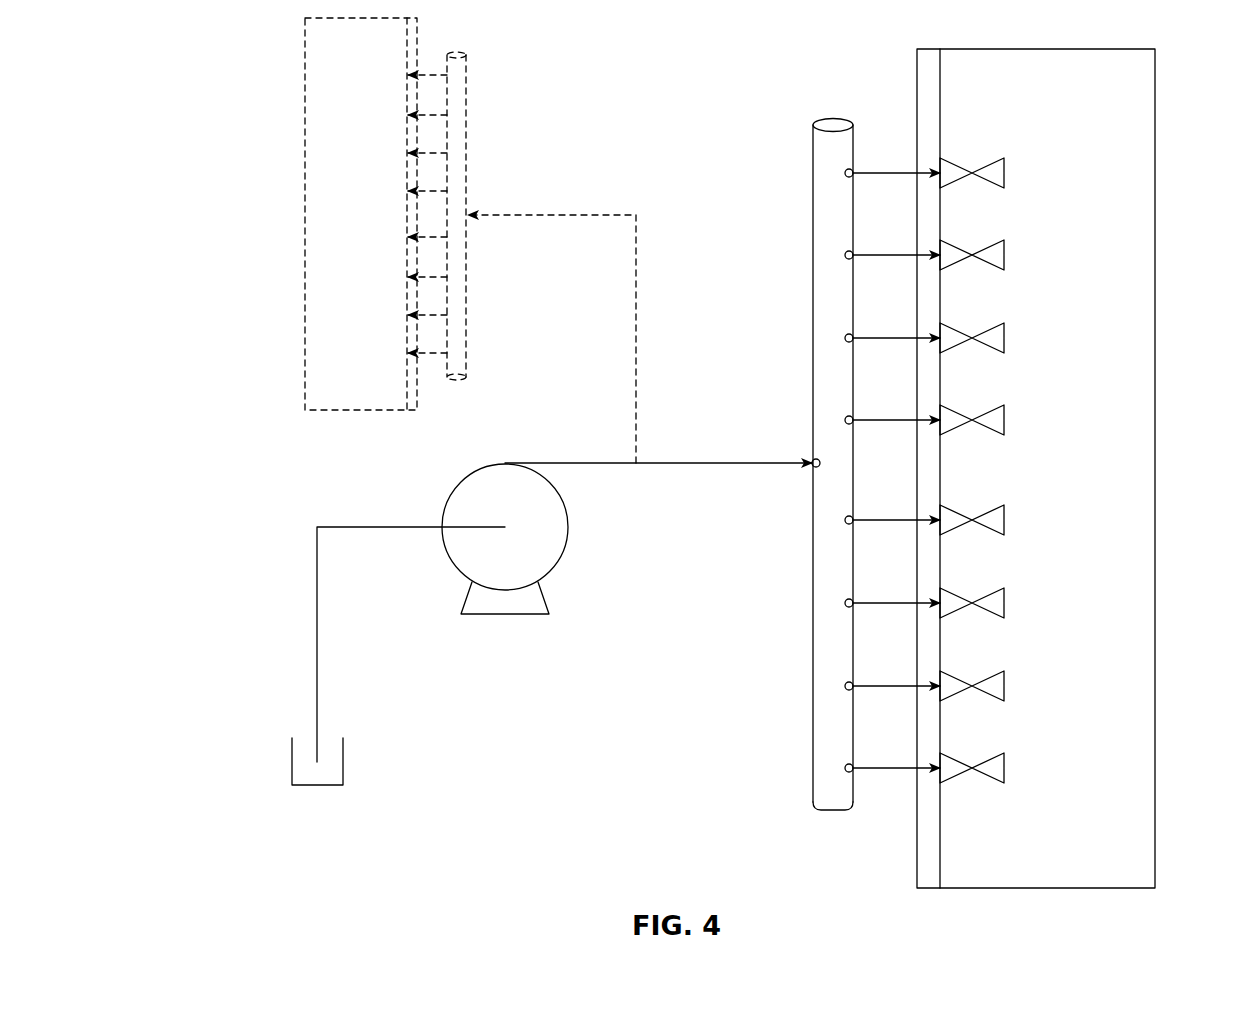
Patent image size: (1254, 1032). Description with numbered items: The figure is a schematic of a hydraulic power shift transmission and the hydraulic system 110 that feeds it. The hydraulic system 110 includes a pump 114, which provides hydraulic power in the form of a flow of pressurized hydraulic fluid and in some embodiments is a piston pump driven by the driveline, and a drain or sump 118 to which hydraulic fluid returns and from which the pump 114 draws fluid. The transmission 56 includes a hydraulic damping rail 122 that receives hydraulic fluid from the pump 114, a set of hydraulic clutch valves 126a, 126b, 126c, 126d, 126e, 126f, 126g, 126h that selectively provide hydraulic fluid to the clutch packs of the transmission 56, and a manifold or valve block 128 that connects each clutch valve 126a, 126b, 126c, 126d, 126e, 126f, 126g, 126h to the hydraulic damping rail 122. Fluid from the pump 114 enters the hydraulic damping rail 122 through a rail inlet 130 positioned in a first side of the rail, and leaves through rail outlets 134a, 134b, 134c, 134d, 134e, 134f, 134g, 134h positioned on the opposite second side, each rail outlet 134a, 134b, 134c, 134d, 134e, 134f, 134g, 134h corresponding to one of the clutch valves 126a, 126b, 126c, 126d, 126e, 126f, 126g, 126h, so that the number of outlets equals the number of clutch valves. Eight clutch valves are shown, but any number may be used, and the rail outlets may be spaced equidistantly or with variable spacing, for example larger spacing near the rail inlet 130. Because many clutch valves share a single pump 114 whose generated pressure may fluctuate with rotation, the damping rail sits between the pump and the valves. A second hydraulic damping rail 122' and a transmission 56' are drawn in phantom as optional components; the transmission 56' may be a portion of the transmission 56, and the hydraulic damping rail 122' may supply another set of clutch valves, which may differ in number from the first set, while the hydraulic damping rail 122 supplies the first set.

The transmission 56 is at (1074, 468).
The transmission 56' is at (325, 214).
The hydraulic system 110 is at (392, 493).
The pump 114 is at (475, 472).
The drain or sump 118 is at (292, 762).
The hydraulic damping rail 122 is at (761, 465).
The hydraulic damping rail 122' is at (522, 257).
The hydraulic clutch valve 126a is at (1004, 173).
The hydraulic clutch valve 126b is at (1004, 255).
The hydraulic clutch valve 126c is at (1004, 338).
The hydraulic clutch valve 126d is at (1004, 420).
The hydraulic clutch valve 126e is at (1004, 520).
The hydraulic clutch valve 126f is at (1004, 603).
The hydraulic clutch valve 126g is at (1004, 686).
The hydraulic clutch valve 126h is at (1004, 768).
The manifold or valve block 128 is at (942, 93).
The rail inlet 130 is at (813, 459).
The rail outlet 134a is at (845, 171).
The rail outlet 134b is at (845, 253).
The rail outlet 134c is at (845, 336).
The rail outlet 134d is at (845, 418).
The rail outlet 134e is at (845, 518).
The rail outlet 134f is at (845, 601).
The rail outlet 134g is at (845, 684).
The rail outlet 134h is at (845, 766).